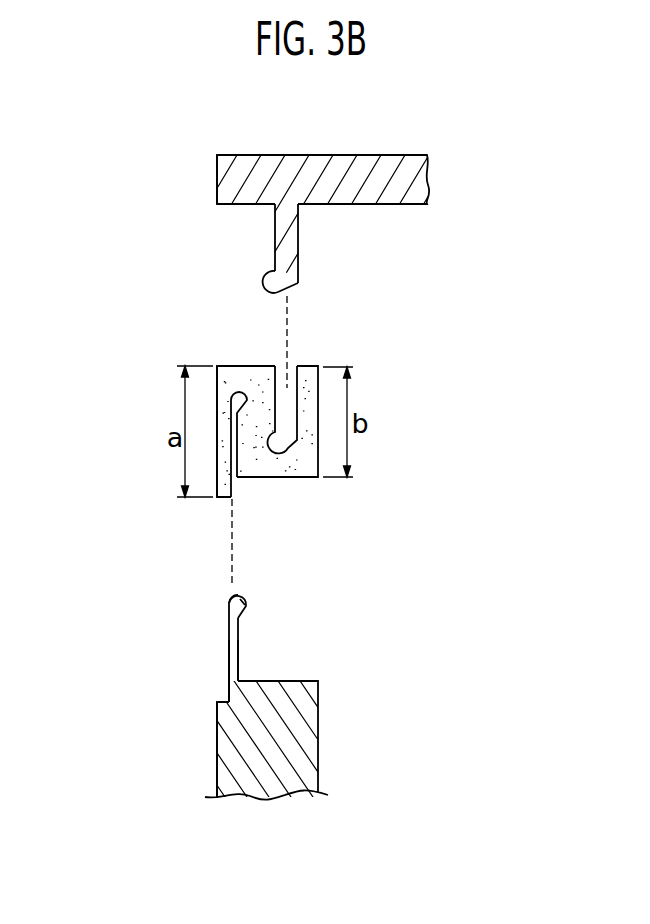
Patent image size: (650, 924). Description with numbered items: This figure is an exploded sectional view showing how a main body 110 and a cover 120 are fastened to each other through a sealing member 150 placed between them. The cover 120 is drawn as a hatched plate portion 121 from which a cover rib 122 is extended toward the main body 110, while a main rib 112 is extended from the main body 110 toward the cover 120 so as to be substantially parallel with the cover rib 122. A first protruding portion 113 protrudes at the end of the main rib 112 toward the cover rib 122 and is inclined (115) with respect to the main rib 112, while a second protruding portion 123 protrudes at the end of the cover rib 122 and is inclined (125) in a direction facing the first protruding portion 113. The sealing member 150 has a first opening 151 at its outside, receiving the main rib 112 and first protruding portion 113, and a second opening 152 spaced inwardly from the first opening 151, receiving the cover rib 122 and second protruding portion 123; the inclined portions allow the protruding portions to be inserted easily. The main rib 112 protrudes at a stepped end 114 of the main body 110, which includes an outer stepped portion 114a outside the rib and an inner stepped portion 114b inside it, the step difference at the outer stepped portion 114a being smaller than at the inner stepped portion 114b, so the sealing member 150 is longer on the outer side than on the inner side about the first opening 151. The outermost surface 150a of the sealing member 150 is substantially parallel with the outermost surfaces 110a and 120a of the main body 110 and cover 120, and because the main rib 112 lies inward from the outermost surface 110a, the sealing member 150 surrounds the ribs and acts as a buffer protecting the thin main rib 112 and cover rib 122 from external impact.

The main body 110 is at (229, 678).
The outermost surface of the main body 110a is at (216, 750).
The main rib 112 is at (157, 634).
The first protruding portion 113 is at (248, 595).
The end of the main body 114 is at (150, 675).
The outer stepped portion 114a is at (229, 700).
The inner stepped portion 114b is at (235, 666).
The inclined portion of the first protruding portion 115 is at (226, 593).
The cover 120 is at (327, 207).
The outermost surface of the cover 120a is at (216, 178).
The top plate 121 is at (295, 158).
The cover rib 122 is at (287, 226).
The second protruding portion 123 is at (283, 295).
The inclined portion of the second protruding portion 125 is at (296, 288).
The sealing member 150 is at (238, 431).
The outermost surface of the sealing member 150a is at (216, 413).
The first opening 151 is at (232, 447).
The second opening 152 is at (287, 407).